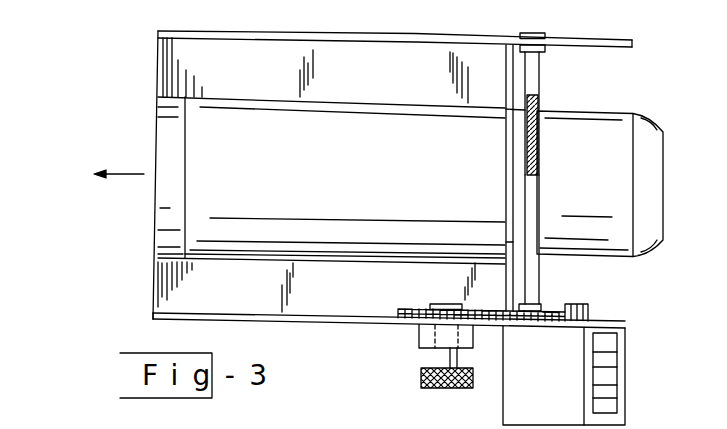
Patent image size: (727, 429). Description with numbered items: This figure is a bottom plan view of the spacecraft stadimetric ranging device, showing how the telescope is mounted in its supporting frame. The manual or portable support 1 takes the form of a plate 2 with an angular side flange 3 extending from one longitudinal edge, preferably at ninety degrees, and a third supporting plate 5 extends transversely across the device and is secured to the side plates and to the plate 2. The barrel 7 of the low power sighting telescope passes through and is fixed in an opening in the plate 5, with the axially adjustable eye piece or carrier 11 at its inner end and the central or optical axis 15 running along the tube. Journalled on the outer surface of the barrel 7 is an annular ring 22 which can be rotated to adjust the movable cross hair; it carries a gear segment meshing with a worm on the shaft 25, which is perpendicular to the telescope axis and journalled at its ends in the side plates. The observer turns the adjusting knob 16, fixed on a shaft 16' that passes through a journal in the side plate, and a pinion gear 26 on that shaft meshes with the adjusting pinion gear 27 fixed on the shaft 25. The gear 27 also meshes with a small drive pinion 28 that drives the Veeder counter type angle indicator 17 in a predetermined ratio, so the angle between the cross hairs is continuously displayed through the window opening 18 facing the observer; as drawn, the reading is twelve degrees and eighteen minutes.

The manual or portable support 1 is at (395, 216).
The plate 2 is at (172, 63).
The angular side flange 3 is at (270, 35).
The third supporting plate 5 is at (508, 82).
The barrel 7 is at (324, 250).
The eye piece or carrier 11 is at (658, 160).
The central or optical axis 15 is at (125, 174).
The adjusting knob 16 is at (428, 378).
The shaft 16' is at (429, 347).
The angle indicator 17 is at (626, 347).
The window opening 18 is at (627, 395).
The annular ring 22 is at (530, 248).
The shaft 25 is at (536, 72).
The pinion gear 26 is at (412, 310).
The adjusting pinion gear 27 is at (553, 312).
The small drive pinion 28 is at (581, 304).